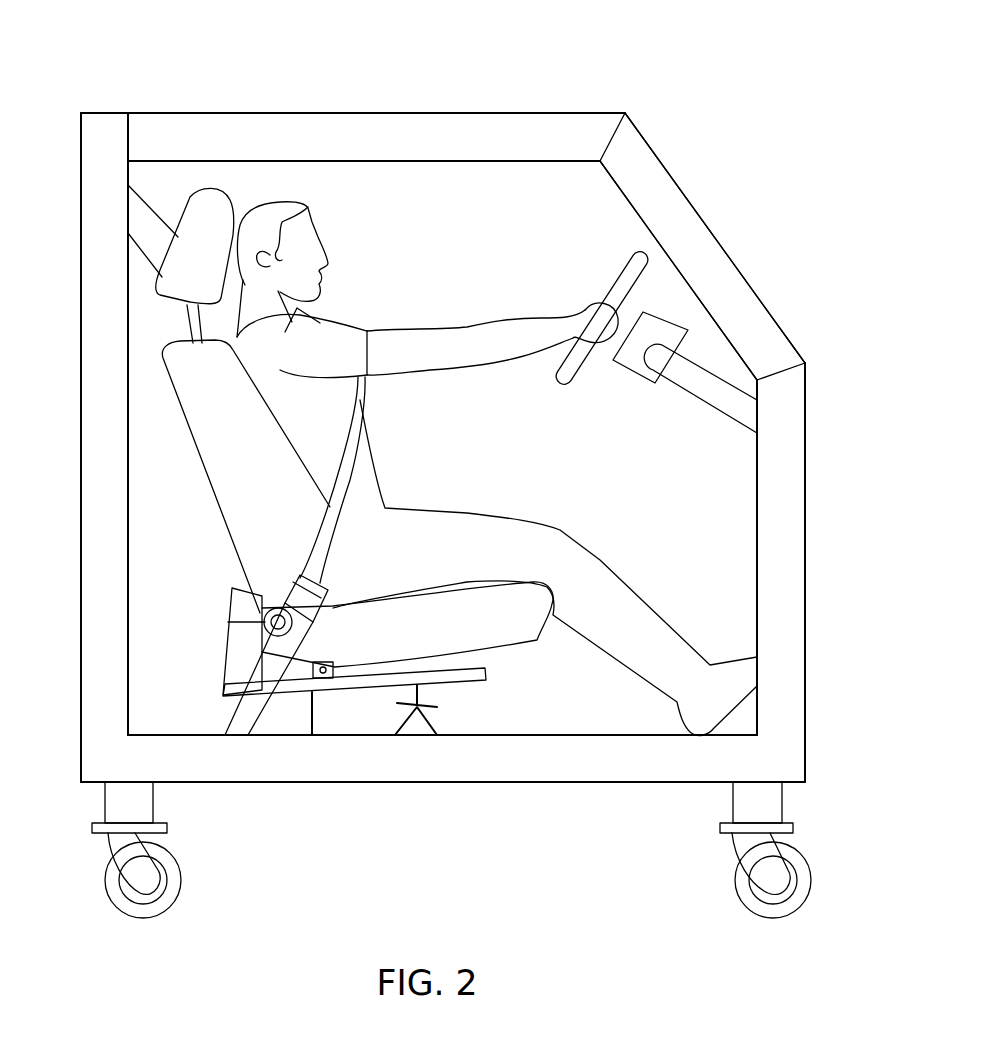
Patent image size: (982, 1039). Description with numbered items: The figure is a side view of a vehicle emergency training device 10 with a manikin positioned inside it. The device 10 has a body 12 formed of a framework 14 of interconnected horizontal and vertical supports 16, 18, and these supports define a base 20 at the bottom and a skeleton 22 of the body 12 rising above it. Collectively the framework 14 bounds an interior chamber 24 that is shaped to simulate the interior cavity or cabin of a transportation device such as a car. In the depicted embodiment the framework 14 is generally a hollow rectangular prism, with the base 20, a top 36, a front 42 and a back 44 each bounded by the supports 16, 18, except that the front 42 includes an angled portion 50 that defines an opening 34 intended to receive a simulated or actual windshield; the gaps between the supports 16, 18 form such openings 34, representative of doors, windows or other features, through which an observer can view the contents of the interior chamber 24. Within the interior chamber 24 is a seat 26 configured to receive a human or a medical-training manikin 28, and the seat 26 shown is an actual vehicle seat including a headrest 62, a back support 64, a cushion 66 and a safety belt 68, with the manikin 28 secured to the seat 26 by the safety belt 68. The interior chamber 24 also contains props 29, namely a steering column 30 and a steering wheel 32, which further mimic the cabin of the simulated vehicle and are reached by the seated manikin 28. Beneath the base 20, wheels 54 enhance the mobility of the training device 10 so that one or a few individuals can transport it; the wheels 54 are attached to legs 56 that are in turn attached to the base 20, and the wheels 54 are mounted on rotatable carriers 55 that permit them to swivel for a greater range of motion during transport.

The vehicle emergency training device 10 is at (740, 97).
The body 12 is at (95, 560).
The framework 14 is at (795, 688).
The horizontal supports 16 is at (452, 112).
The vertical supports 18 is at (81, 387).
The base 20 is at (175, 735).
The skeleton 22 is at (172, 124).
The interior chamber 24 is at (515, 175).
The seat 26 is at (347, 537).
The medical-training manikin 28 is at (316, 210).
The props 29 is at (633, 378).
The steering column 30 is at (705, 397).
The steering wheel 32 is at (622, 270).
The openings 34 is at (138, 170).
The top 36 is at (305, 112).
The front 42 is at (806, 516).
The back 44 is at (81, 489).
The angled portion 50 is at (720, 258).
The wheels 54 is at (805, 880).
The rotatable carriers 55 is at (116, 848).
The legs 56 is at (778, 808).
The headrest 62 is at (195, 213).
The back support 64 is at (228, 497).
The cushion 66 is at (487, 635).
The safety belt 68 is at (362, 408).